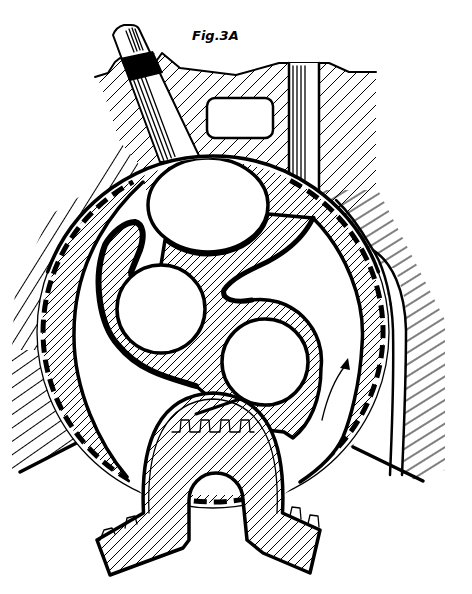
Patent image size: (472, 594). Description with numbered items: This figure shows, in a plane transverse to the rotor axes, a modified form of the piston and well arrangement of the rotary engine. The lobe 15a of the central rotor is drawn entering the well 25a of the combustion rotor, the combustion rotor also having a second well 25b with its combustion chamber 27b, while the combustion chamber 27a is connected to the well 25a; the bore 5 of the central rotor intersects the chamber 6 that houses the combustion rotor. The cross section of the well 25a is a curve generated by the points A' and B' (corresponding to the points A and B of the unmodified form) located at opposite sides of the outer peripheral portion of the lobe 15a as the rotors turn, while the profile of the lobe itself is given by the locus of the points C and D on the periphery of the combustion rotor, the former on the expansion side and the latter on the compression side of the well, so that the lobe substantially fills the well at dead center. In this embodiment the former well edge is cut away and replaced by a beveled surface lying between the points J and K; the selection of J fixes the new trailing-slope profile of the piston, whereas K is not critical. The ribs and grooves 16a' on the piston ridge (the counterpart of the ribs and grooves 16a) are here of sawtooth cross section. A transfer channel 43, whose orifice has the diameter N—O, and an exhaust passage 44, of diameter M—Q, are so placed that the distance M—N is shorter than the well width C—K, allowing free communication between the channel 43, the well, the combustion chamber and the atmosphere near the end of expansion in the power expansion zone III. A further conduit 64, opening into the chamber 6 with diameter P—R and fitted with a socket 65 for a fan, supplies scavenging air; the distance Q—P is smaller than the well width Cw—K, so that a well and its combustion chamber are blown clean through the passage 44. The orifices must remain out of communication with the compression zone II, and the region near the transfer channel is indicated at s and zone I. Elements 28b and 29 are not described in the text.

The chamber 6 is at (150, 166).
The conduit 64 is at (166, 100).
The socket 65 is at (114, 60).
The exhaust passage 44 is at (300, 90).
The bore 5 is at (377, 357).
The transfer channel 43 is at (396, 474).
The well 25a is at (143, 437).
The well 25b is at (267, 217).
The port 28b is at (213, 258).
The partition wall 29 is at (113, 357).
The combustion chamber 27a is at (307, 351).
The combustion chamber 27b is at (203, 293).
The ribs and grooves 16a' is at (228, 388).
The sealing vane 16a is at (228, 388).
The lobe 15a is at (208, 484).
The point C is at (314, 504).
The point R is at (171, 166).
The point P is at (197, 166).
The point K is at (283, 180).
The point J is at (279, 190).
The point Q is at (296, 173).
The point M is at (326, 192).
The point N is at (413, 211).
The point O is at (372, 312).
The point B' is at (274, 403).
The point B is at (274, 403).
The point A' is at (149, 397).
The point A is at (149, 397).
The point D is at (142, 490).
The point Cw is at (290, 481).
The point s is at (355, 442).
The section I is at (328, 549).
The compression zone II is at (60, 517).
The power expansion zone III is at (374, 528).